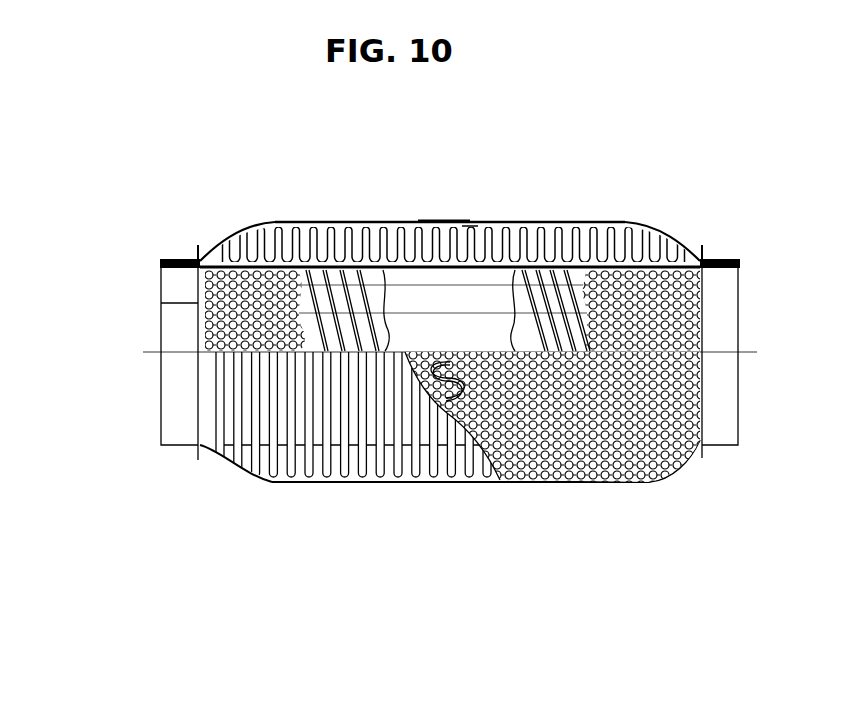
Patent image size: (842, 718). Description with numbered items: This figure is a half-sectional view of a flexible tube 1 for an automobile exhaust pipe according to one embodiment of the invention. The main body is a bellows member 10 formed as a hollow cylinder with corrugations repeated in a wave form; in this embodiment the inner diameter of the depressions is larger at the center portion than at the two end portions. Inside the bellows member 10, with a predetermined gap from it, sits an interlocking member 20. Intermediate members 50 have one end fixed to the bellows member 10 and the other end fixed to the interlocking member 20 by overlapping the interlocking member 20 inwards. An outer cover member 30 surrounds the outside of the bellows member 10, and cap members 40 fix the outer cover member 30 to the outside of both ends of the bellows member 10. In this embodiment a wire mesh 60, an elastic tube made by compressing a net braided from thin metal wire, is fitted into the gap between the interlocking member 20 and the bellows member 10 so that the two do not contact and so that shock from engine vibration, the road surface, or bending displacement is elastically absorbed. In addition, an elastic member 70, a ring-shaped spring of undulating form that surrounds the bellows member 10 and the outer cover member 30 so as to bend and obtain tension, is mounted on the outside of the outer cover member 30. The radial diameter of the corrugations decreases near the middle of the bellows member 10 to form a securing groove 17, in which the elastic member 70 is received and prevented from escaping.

The flexible tube 1 is at (182, 488).
The bellows member 10 is at (247, 230).
The securing groove 17 is at (468, 222).
The interlocking member 20 is at (540, 235).
The outer cover member 30 is at (673, 247).
The cap member 40 is at (165, 262).
The intermediate member 50 is at (175, 272).
The wire mesh 60 is at (160, 303).
The elastic member 70 is at (430, 220).